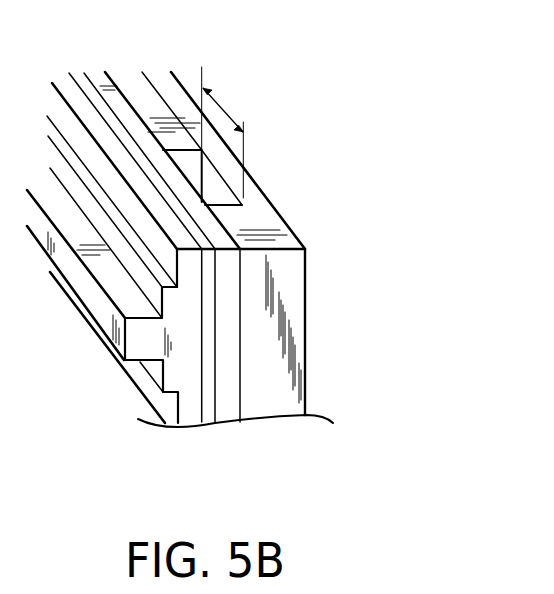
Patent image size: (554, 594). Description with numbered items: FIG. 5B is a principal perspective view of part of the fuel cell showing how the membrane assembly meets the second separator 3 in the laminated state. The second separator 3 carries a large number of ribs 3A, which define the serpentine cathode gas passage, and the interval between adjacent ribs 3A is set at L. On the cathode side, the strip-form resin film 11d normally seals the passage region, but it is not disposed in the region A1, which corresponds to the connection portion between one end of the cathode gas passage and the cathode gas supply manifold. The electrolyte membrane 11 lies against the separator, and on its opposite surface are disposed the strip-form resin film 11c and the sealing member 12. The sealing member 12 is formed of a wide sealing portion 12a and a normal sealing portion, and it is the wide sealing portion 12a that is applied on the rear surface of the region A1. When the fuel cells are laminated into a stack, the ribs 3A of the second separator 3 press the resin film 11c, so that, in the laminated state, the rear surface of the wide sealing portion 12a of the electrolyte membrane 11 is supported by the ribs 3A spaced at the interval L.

The second separator 3 is at (306, 303).
The ribs 3A is at (236, 225).
The region A1 is at (221, 193).
The interval between ribs L is at (223, 132).
The electrolyte membrane 11 is at (210, 417).
The resin film 11c is at (193, 418).
The resin film 11d is at (228, 418).
The sealing member 12 is at (97, 308).
The wide sealing portion 12a is at (70, 303).